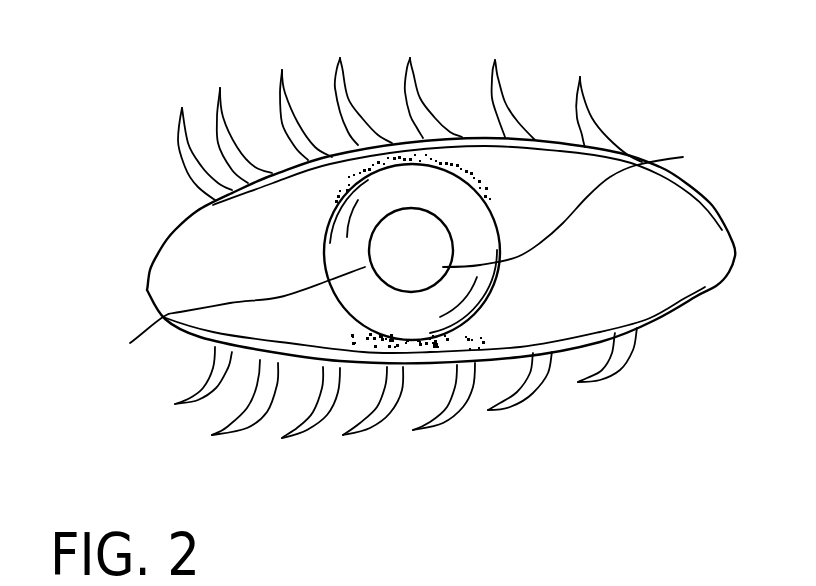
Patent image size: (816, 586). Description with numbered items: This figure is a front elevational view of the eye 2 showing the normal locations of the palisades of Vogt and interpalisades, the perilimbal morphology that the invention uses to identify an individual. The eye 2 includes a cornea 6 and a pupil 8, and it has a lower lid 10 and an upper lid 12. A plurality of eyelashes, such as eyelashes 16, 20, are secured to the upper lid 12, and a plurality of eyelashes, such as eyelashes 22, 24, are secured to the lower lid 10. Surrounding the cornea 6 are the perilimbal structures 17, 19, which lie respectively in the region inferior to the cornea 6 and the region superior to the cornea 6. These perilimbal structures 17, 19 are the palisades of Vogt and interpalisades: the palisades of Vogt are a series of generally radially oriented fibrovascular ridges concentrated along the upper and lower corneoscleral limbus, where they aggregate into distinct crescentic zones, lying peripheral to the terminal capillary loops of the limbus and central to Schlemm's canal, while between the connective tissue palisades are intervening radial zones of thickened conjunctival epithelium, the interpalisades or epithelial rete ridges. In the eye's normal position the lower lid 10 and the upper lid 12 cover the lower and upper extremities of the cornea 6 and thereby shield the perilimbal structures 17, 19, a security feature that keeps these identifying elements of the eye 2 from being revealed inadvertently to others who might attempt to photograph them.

The eye 2 is at (640, 107).
The cornea 6 is at (232, 317).
The pupil 8 is at (584, 203).
The lower lid 10 is at (563, 343).
The upper lid 12 is at (478, 140).
The eyelash 16 is at (177, 140).
The perilimbal structure 17 is at (478, 195).
The perilimbal structure 19 is at (435, 345).
The eyelash 20 is at (228, 125).
The eyelash 22 is at (193, 388).
The eyelash 24 is at (250, 412).